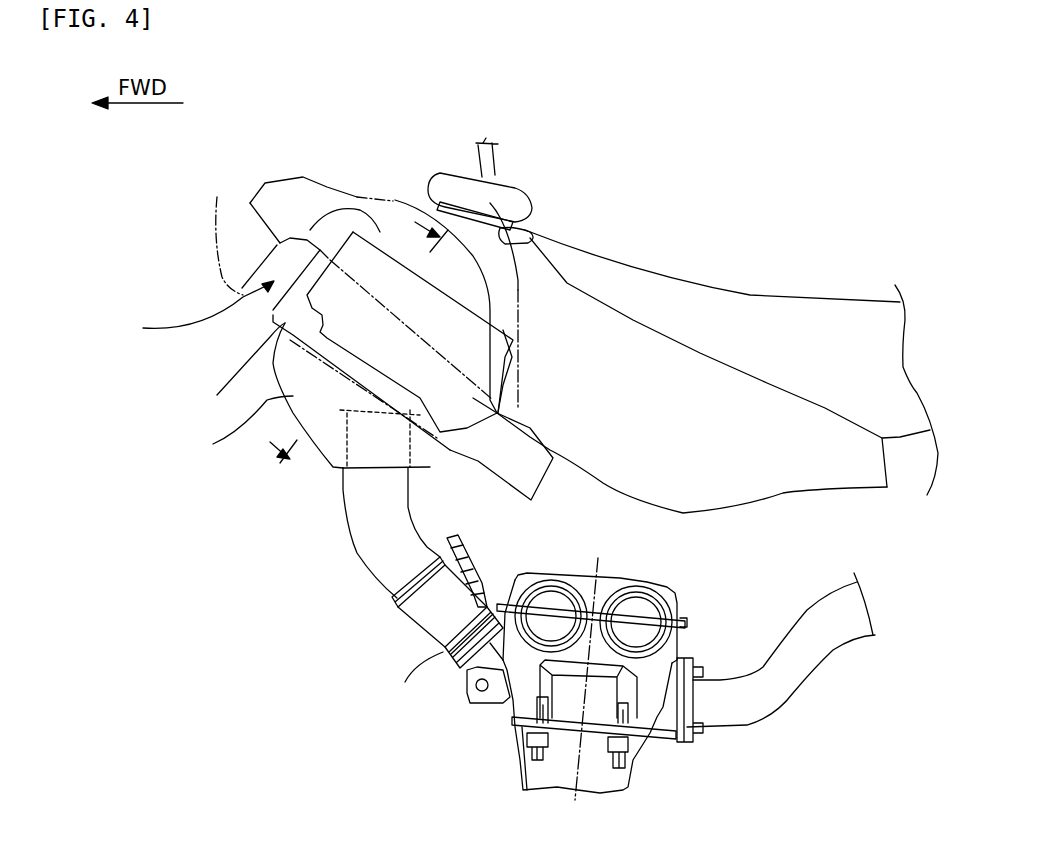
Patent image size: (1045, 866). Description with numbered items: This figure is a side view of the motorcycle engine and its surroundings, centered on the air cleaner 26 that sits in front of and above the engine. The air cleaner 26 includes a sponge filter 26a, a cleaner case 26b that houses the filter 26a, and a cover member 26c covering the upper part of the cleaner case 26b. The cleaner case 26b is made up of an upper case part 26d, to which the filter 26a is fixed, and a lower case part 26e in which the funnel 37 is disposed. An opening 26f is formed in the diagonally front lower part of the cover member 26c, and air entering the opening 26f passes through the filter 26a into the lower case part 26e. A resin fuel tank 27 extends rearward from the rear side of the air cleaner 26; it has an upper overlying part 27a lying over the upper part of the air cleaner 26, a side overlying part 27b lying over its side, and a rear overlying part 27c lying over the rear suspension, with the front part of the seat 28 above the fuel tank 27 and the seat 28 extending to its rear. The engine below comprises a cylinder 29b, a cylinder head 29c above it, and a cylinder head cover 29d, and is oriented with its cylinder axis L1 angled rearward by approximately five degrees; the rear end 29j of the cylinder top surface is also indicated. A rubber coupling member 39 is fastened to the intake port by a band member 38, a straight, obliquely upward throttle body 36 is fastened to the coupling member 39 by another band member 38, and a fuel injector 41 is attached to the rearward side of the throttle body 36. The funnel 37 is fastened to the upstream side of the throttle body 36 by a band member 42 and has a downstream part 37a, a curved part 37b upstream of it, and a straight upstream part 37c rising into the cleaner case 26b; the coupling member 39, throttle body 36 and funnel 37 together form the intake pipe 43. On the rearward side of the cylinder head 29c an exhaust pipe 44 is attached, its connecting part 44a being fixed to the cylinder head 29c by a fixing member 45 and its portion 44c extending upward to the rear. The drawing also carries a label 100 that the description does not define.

The air cleaner 26 is at (205, 238).
The sponge filter 26a is at (388, 273).
The cleaner case 26b is at (150, 388).
The cover member 26c is at (285, 200).
The upper case part 26d is at (217, 395).
The lower case part 26e is at (213, 444).
The opening 26f is at (223, 231).
The fuel tank 27 is at (628, 335).
The upper overlying part 27a is at (533, 233).
The side overlying part 27b is at (512, 373).
The rear overlying part 27c is at (817, 433).
The seat 28 is at (797, 315).
The cylinder 29b is at (530, 777).
The cylinder head 29c is at (522, 702).
The cylinder head cover 29d is at (603, 590).
The rear end of cylinder plane 29j is at (653, 737).
The throttle body 36 is at (427, 613).
The funnel 37 is at (403, 527).
The downstream part 37a is at (383, 583).
The curved part 37b is at (360, 527).
The upstream part 37c is at (360, 480).
The band member 38 is at (447, 658).
The coupling member 39 is at (457, 660).
The fuel injector 41 is at (470, 563).
The band member 42 is at (388, 612).
The intake pipe 43 is at (352, 664).
The exhaust pipe 44 is at (841, 697).
The connecting part 44a is at (687, 667).
The portion extending upward to the rear 44c is at (823, 603).
The fixing member 45 is at (693, 737).
The air flow direction 100 is at (339, 343).
The cylinder axis L1 is at (577, 803).